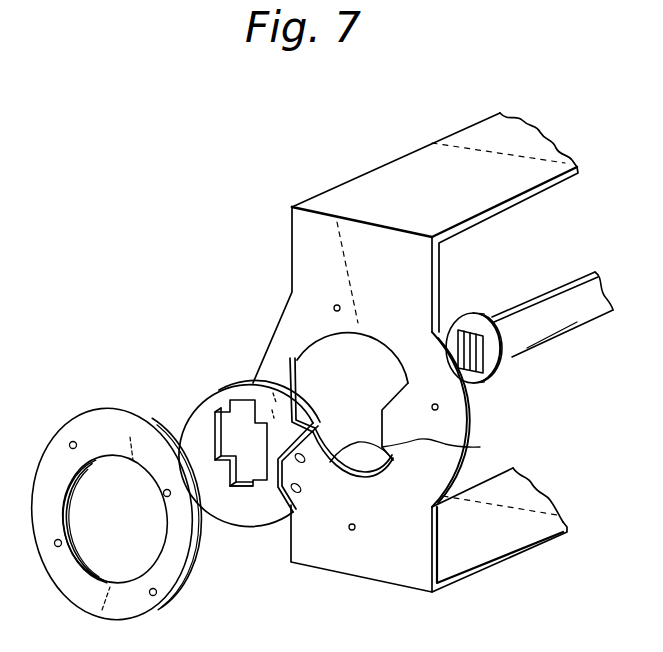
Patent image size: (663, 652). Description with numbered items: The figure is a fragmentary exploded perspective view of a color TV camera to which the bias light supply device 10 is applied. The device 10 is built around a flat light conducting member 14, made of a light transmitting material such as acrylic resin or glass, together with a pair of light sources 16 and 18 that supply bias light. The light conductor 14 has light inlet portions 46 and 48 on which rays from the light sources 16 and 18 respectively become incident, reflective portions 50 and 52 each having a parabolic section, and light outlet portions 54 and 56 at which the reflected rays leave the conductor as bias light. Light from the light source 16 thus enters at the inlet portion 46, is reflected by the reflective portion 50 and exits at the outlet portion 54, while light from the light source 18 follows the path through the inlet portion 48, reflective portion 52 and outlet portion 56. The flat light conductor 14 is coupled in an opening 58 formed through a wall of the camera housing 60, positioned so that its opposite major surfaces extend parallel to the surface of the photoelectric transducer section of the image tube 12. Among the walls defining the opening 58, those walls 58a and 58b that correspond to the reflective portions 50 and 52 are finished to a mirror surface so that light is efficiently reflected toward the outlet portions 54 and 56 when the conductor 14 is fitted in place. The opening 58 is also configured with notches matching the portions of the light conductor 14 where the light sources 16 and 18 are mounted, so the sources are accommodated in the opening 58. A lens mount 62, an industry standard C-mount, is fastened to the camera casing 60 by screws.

The bias light supply device 10 is at (158, 386).
The image tube 12 is at (577, 318).
The flat light conducting member 14 is at (215, 407).
The light source 16 is at (305, 460).
The light source 18 is at (296, 495).
The light inlet portion 46 is at (297, 428).
The light inlet portion 48 is at (268, 510).
The reflective portion 50 is at (258, 382).
The reflective portion 52 is at (235, 492).
The light outlet portion 54 is at (228, 428).
The light outlet portion 56 is at (233, 495).
The opening 58 is at (322, 366).
The wall of the opening 58a is at (320, 368).
The wall of the opening 58b is at (470, 437).
The camera housing 60 is at (302, 243).
The lens mount 62 is at (53, 448).